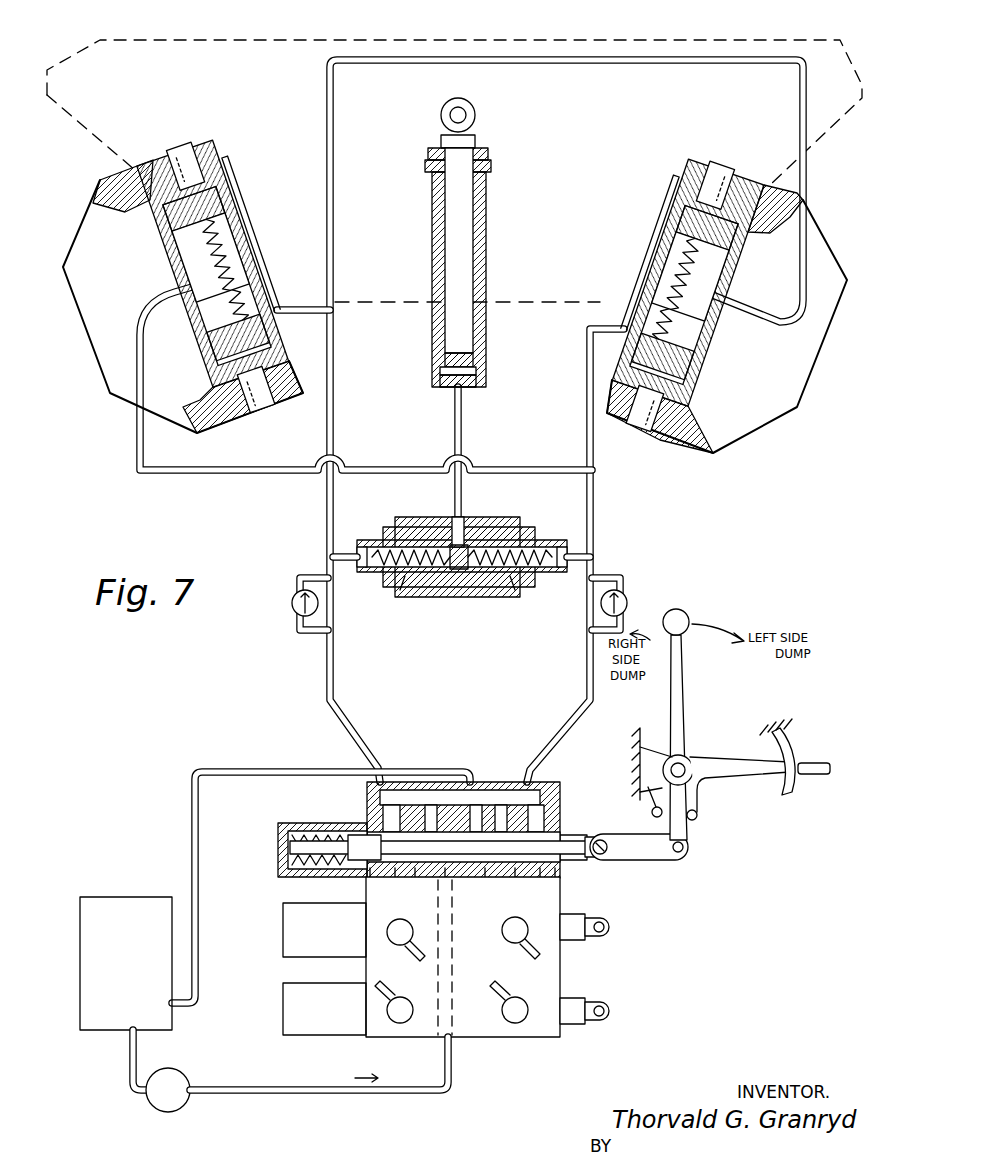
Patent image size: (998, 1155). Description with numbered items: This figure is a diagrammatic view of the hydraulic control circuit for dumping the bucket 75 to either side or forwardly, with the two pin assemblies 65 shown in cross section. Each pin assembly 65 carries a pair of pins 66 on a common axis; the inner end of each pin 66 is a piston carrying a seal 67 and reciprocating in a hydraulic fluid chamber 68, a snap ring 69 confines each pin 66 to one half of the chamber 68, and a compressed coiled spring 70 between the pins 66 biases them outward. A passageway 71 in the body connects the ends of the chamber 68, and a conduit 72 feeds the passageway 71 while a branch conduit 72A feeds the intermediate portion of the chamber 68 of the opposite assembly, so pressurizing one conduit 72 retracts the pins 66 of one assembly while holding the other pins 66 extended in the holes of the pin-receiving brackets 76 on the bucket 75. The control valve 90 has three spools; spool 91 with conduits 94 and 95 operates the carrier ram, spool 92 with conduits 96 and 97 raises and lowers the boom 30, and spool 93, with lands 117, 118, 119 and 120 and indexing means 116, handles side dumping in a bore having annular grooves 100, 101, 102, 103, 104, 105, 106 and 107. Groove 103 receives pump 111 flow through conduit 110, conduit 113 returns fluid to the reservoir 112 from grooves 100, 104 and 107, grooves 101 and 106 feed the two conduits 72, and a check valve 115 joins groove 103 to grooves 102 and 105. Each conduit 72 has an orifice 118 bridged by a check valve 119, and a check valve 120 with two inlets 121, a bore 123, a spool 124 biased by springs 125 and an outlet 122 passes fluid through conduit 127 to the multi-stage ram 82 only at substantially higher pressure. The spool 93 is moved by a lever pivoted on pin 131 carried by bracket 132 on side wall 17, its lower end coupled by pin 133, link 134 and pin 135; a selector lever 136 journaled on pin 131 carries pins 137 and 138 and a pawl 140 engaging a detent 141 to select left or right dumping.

The bucket 75 is at (458, 40).
The branch conduit 72A is at (198, 478).
The hydraulic fluid conduit 72 is at (333, 330).
The pin 66 is at (180, 145).
The pin assembly 65 is at (238, 190).
The seal 67 is at (182, 236).
The hydraulic fluid chamber 68 is at (198, 270).
The snap ring 69 is at (240, 282).
The compressed coiled spring 70 is at (228, 255).
The hydraulic fluid passageway 71 is at (270, 278).
The pin-receiving bracket 76 is at (112, 400).
The multi-stage hydraulic ram 82 is at (432, 212).
The conduit 127 is at (455, 424).
The compressed coiled spring 125 is at (400, 530).
The outlet 122 is at (455, 520).
The inlet 121 is at (565, 547).
The orifice 118 is at (336, 618).
The check valve 119 is at (293, 610).
The valve spool 124 is at (437, 598).
The check valve 120 is at (483, 597).
The valve bore 123 is at (510, 596).
The boom 30 is at (684, 712).
The bracket 132 is at (645, 752).
The side wall 17 is at (638, 744).
The pin 131 is at (686, 762).
The detent 141 is at (795, 745).
The selector lever 136 is at (822, 776).
The pawl 140 is at (787, 782).
The pin 137 is at (698, 814).
The pin 138 is at (652, 813).
The pin 133 is at (684, 848).
The link 134 is at (655, 860).
The pin 135 is at (606, 853).
The valve spool 93 is at (582, 832).
The check valve 115 is at (433, 800).
The hydraulic fluid conduit 113 is at (190, 794).
The indexing means 116 is at (312, 822).
The land 117 is at (442, 847).
The annular groove 100 is at (370, 878).
The annular groove 101 is at (395, 878).
The annular groove 102 is at (415, 878).
The annular groove 103 is at (447, 878).
The annular groove 104 is at (485, 878).
The annular groove 105 is at (516, 878).
The annular groove 106 is at (543, 878).
The annular groove 107 is at (556, 866).
The hydraulic fluid conduit 96 is at (413, 952).
The hydraulic fluid conduit 97 is at (530, 950).
The conduit 94 is at (386, 1003).
The conduit 95 is at (500, 1000).
The valve spool 92 is at (585, 940).
The valve spool 91 is at (585, 1024).
The control valve 90 is at (520, 1040).
The hydraulic fluid reservoir 112 is at (135, 958).
The hydraulic fluid pump 111 is at (158, 1110).
The hydraulic fluid conduit 110 is at (320, 1094).